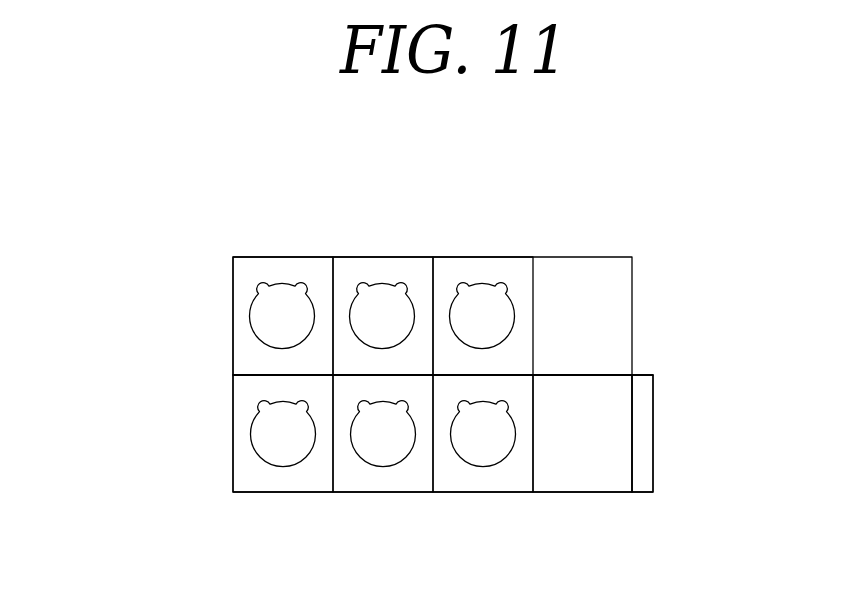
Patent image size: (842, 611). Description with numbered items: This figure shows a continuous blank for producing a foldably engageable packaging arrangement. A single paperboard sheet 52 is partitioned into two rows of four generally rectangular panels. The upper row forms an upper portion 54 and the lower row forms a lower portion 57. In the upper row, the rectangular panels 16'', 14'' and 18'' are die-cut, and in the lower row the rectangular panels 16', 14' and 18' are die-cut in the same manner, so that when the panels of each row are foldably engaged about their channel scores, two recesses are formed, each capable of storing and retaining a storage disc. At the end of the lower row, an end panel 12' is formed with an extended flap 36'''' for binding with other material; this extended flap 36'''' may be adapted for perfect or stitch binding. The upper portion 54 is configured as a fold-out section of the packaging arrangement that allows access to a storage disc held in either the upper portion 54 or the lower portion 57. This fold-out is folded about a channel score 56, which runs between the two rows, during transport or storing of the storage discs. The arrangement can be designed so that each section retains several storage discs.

The paperboard sheet 52 is at (143, 386).
The upper portion 54 is at (232, 257).
The lower portion 57 is at (232, 377).
The channel score 56 is at (613, 374).
The rectangular panel 16'' is at (291, 270).
The rectangular panel 14'' is at (391, 270).
The rectangular panel 18'' is at (495, 270).
The rectangular panel 16' is at (283, 481).
The rectangular panel 14' is at (383, 481).
The rectangular panel 18' is at (483, 481).
The end panel 12' is at (582, 481).
The extended flap 36'''' is at (696, 430).